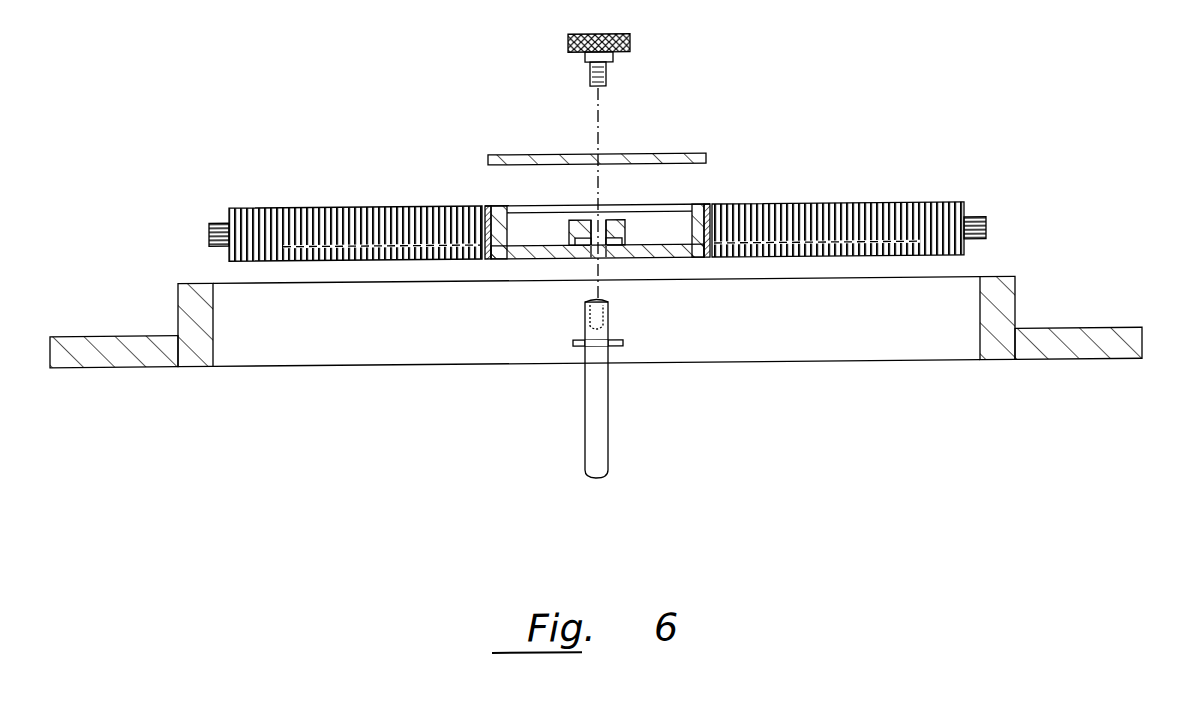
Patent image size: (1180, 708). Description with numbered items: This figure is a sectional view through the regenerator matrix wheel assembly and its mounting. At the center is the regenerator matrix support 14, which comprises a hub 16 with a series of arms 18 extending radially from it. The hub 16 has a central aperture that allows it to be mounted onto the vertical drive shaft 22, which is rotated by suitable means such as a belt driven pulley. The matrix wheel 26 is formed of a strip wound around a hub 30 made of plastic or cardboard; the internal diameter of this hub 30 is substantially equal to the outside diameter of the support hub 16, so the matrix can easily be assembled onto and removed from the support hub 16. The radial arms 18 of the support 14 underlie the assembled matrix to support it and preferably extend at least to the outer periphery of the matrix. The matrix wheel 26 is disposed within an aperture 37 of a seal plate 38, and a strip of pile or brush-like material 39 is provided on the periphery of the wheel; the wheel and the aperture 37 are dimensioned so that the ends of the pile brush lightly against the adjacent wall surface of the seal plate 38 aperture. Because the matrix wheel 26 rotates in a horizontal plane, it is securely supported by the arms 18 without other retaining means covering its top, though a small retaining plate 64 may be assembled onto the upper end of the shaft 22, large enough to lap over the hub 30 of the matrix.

The regenerator matrix support 14 is at (437, 262).
The hub 16 is at (530, 259).
The arms 18 is at (328, 259).
The vertical drive shaft 22 is at (608, 398).
The matrix wheel 26 is at (324, 206).
The hub 30 is at (488, 205).
The aperture 37 is at (213, 345).
The seal plate 38 is at (122, 332).
The strip of pile or brush-like material 39 is at (214, 219).
The retaining plate 64 is at (690, 154).